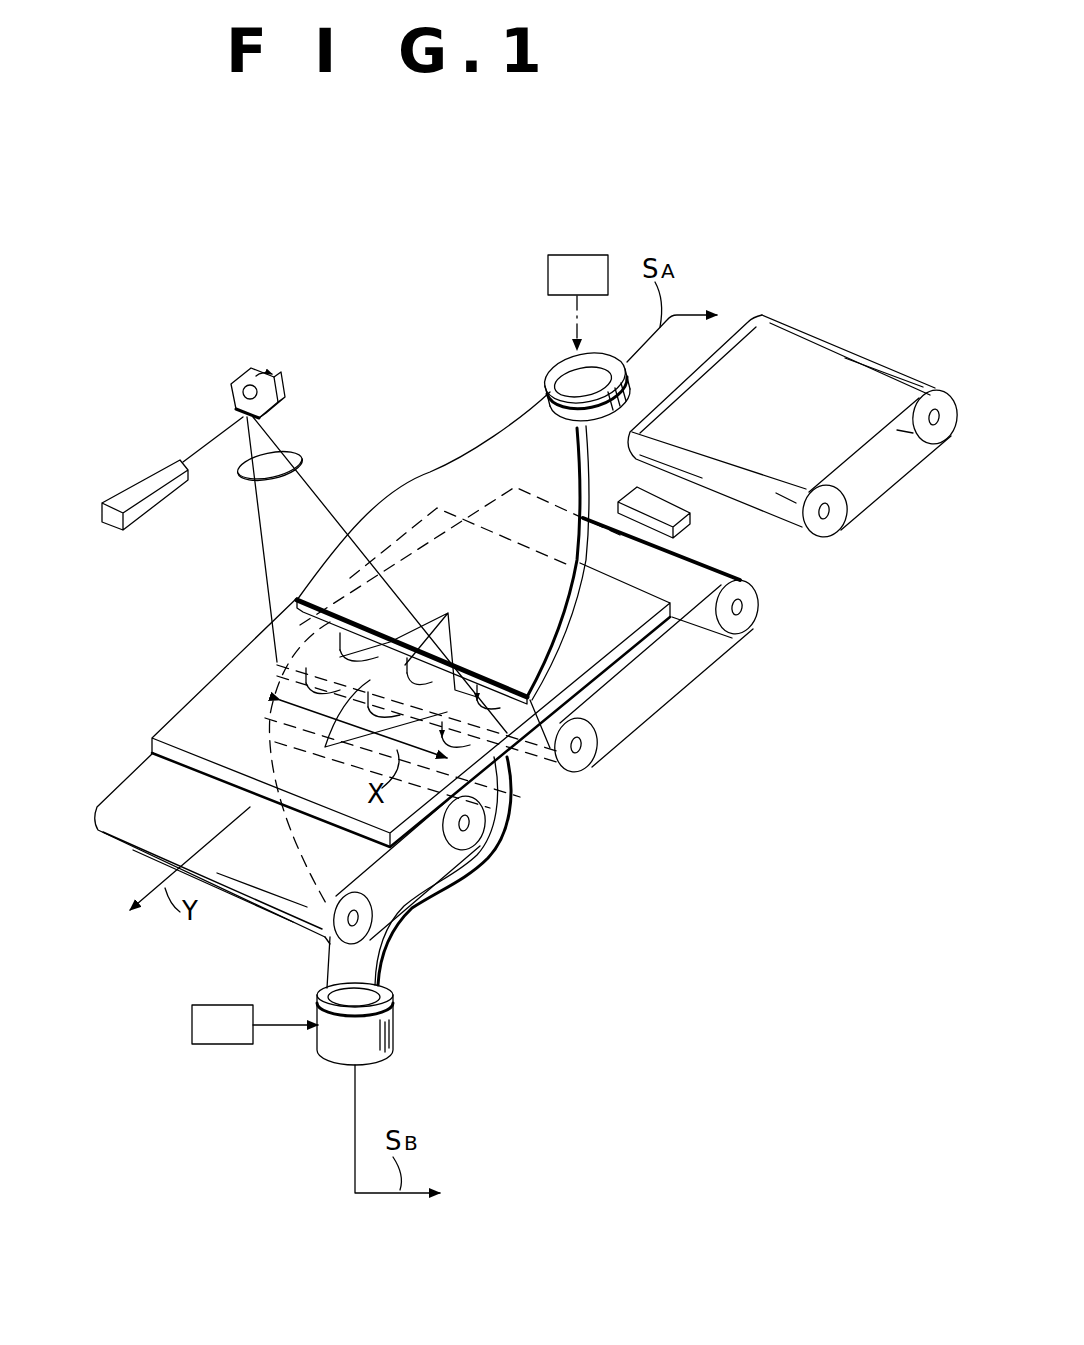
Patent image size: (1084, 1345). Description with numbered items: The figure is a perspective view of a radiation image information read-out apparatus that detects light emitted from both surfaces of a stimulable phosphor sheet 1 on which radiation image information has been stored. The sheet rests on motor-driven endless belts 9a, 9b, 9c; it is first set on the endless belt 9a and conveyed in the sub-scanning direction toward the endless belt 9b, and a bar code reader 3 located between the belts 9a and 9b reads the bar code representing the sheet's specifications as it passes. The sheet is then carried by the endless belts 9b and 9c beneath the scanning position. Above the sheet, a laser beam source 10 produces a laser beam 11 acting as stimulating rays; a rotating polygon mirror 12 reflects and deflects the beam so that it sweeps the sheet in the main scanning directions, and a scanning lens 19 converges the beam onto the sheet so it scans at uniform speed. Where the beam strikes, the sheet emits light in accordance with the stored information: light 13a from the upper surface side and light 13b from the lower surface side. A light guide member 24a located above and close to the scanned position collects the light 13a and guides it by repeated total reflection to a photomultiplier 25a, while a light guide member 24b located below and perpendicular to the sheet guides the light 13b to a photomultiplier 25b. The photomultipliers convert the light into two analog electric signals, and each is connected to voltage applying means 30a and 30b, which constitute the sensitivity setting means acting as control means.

The stimulable phosphor sheet 1 is at (232, 678).
The bar code reader 3 is at (687, 523).
The endless belt 9a is at (880, 493).
The endless belt 9b is at (660, 707).
The endless belt 9c is at (118, 780).
The laser beam source 10 is at (165, 460).
The laser beam 11 is at (337, 517).
The rotating polygon mirror 12 is at (275, 370).
The light emitted from upper surface side 13a is at (420, 645).
The light emitted from lower surface side 13b is at (376, 724).
The scanning lens 19 is at (237, 473).
The light guide member 24a is at (463, 457).
The light guide member 24b is at (507, 840).
The photomultiplier 25a is at (567, 365).
The photomultiplier 25b is at (398, 1042).
The voltage applying means 30a is at (550, 273).
The voltage applying means 30b is at (207, 1047).